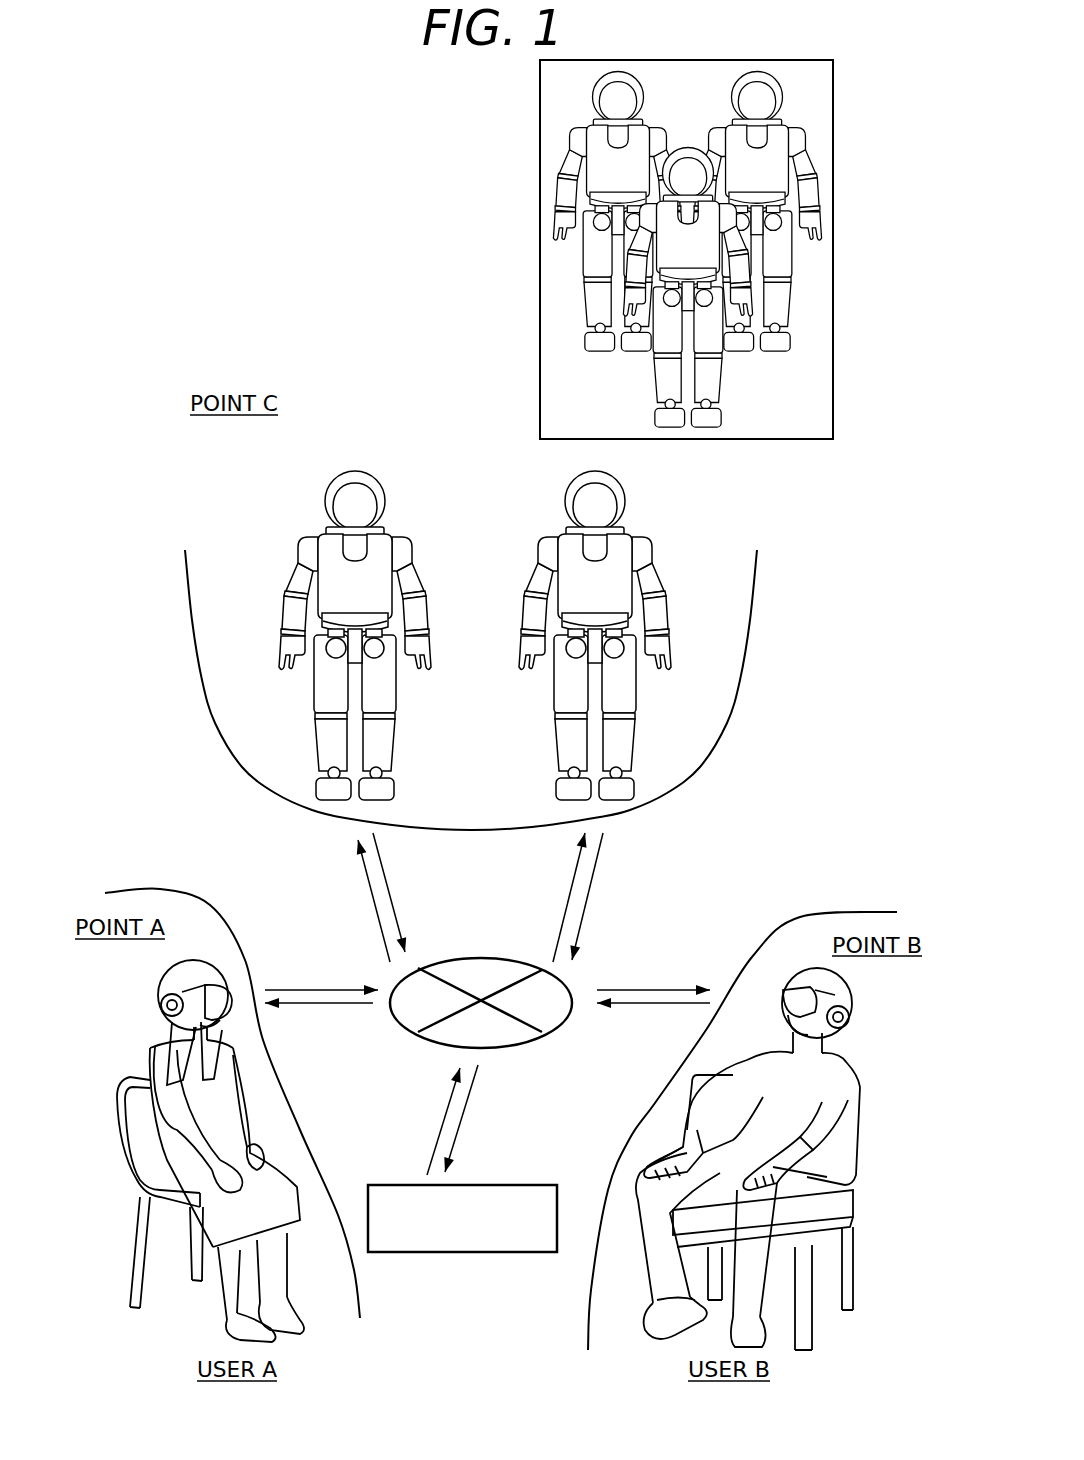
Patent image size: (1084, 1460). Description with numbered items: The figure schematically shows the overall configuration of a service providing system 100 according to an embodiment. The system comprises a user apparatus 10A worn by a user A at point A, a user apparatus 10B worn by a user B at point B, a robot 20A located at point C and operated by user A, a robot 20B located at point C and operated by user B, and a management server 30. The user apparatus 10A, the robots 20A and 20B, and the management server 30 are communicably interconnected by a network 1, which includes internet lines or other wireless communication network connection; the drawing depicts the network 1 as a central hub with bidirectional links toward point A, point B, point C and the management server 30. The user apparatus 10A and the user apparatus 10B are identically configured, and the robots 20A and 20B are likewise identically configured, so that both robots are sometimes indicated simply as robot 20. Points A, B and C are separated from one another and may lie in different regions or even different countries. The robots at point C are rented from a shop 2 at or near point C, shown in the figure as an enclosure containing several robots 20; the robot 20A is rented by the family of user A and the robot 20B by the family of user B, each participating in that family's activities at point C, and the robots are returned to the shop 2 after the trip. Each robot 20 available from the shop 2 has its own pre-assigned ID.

The service providing system 100 is at (245, 258).
The network 1 is at (525, 1045).
The shop 2 is at (832, 297).
The robot 20 is at (808, 148).
The robot 20A is at (298, 567).
The robot 20B is at (655, 563).
The user apparatus 10A is at (160, 995).
The user apparatus 10B is at (857, 1002).
The management server 30 is at (482, 1252).